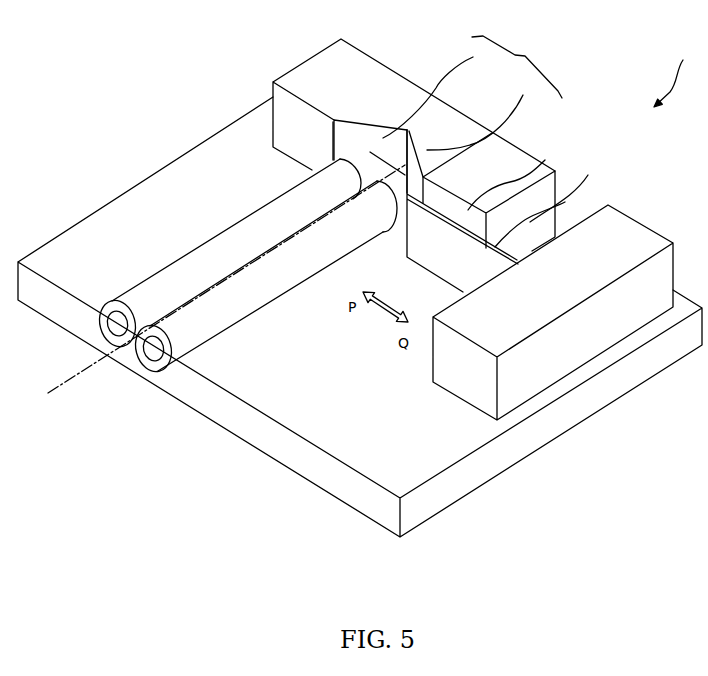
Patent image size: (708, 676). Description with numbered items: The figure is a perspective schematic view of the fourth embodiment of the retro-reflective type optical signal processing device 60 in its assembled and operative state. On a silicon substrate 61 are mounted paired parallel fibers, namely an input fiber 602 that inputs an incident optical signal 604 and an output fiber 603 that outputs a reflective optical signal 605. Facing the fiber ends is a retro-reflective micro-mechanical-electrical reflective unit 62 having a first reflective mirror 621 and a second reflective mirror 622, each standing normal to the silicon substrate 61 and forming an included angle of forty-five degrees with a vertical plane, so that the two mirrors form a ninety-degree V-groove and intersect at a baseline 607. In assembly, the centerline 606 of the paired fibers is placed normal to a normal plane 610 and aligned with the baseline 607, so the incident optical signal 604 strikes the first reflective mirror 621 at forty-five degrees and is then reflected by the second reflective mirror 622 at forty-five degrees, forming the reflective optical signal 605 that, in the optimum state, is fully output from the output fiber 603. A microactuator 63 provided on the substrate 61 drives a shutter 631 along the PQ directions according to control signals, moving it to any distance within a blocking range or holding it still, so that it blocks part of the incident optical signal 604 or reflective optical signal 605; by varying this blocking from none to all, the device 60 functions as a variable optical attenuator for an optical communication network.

The retro-reflective type optical signal processing device 60 is at (678, 80).
The silicon substrate 61 is at (585, 410).
The retro-reflective micro-mechanical-electrical reflective unit 62 is at (517, 66).
The microactuator 63 is at (645, 238).
The input fiber 602 is at (158, 272).
The output fiber 603 is at (237, 323).
The incident optical signal 604 is at (355, 158).
The reflective optical signal 605 is at (489, 150).
The centerline 606 is at (72, 373).
The baseline 607 is at (407, 137).
The normal plane 610 is at (279, 98).
The first reflective mirror 621 is at (440, 95).
The second reflective mirror 622 is at (485, 114).
The shutter 631 is at (570, 191).